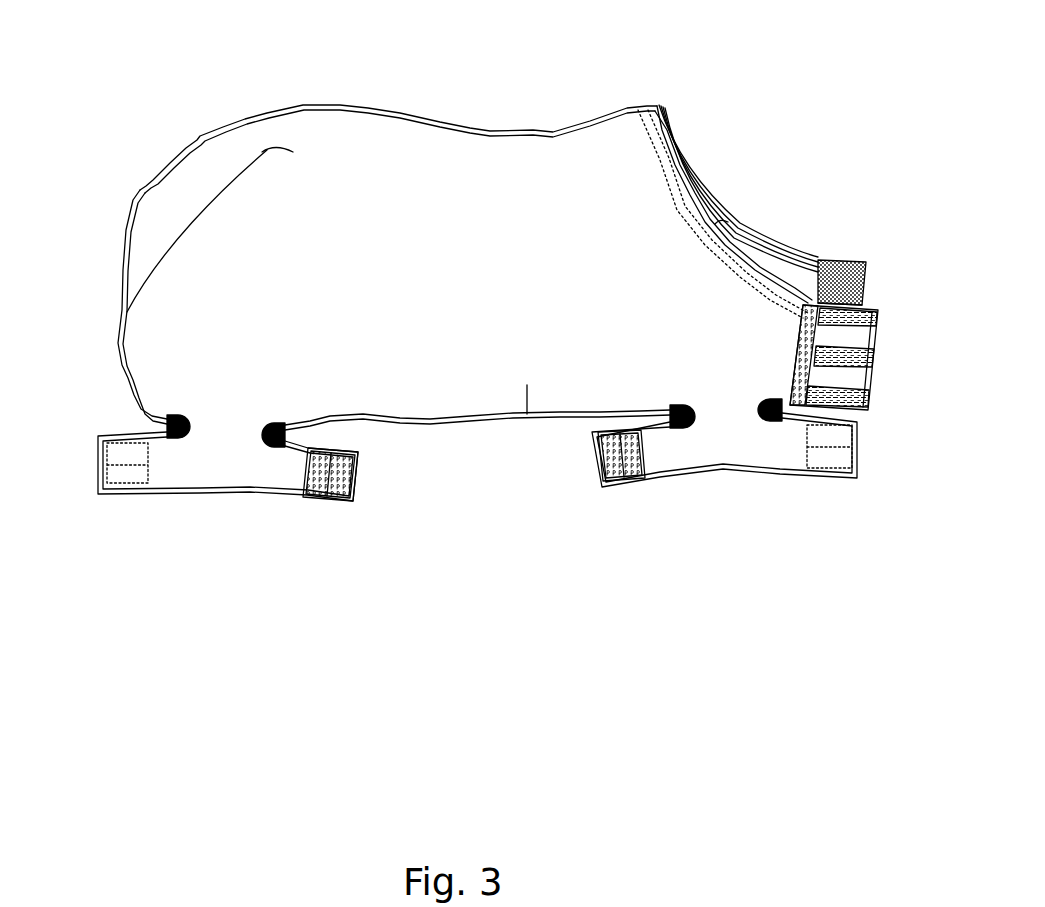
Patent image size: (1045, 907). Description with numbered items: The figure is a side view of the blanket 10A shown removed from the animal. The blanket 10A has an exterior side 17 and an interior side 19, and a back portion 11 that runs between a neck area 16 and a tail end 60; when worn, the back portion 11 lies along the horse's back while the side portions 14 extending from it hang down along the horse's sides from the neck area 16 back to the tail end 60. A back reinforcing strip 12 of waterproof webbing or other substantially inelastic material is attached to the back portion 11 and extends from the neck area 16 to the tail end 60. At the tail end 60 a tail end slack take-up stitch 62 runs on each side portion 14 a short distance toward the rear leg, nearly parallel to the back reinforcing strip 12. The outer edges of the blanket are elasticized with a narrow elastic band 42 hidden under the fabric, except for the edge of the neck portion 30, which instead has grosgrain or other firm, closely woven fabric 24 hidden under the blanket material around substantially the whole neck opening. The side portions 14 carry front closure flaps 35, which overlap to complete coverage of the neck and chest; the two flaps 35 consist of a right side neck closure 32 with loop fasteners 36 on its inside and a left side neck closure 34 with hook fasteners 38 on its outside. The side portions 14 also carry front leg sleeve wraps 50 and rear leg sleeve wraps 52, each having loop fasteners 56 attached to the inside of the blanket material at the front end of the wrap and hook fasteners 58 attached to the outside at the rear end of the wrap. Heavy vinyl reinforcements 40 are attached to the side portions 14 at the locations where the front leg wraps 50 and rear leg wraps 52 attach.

The blanket 10A is at (368, 107).
The back portion 11 is at (428, 161).
The back reinforcing strip 12 is at (458, 130).
The side portions 14 is at (464, 250).
The neck area 16 is at (704, 276).
The exterior side 17 is at (527, 422).
The interior side 19 is at (778, 258).
The grosgrain fabric 24 is at (663, 183).
The neck portion 30 is at (740, 232).
The right side neck closure 32 is at (880, 340).
The left side neck closure 34 is at (870, 263).
The front closure flaps 35 is at (815, 273).
The loop fasteners 36 is at (865, 293).
The hook fasteners 38 is at (868, 397).
The heavy vinyl reinforcements 40 is at (180, 416).
The narrow elastic band 42 is at (428, 422).
The front leg sleeve wraps 50 is at (742, 453).
The rear leg sleeve wraps 52 is at (229, 473).
The loop fasteners 56 is at (148, 470).
The hook fasteners 58 is at (355, 485).
The tail end 60 is at (123, 237).
The tail end slack take-up stitch 62 is at (223, 193).